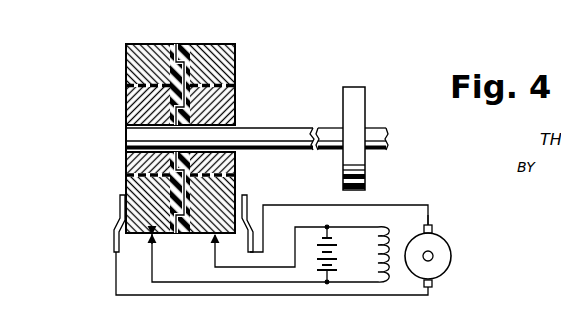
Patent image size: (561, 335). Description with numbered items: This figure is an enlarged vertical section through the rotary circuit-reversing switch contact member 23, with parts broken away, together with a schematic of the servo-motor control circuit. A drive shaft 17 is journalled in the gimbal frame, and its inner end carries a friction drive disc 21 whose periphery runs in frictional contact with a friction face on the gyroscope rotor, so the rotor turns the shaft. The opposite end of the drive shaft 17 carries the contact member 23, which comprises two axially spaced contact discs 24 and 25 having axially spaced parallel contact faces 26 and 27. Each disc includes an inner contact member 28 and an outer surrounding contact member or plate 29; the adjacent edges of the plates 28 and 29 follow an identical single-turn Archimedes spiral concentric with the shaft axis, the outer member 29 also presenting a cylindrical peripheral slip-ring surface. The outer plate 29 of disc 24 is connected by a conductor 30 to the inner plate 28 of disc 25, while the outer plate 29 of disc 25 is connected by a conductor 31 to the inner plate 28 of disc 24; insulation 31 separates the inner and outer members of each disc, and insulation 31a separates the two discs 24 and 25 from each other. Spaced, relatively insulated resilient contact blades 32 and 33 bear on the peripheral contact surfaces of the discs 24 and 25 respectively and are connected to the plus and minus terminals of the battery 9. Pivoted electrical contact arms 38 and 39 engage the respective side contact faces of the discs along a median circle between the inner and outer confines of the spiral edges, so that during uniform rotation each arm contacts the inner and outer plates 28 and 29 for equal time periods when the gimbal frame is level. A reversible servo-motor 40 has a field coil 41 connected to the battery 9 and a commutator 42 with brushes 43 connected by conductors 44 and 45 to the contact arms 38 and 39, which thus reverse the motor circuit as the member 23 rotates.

The battery 9 is at (318, 262).
The drive shaft 17 is at (293, 135).
The friction drive disc 21 is at (358, 96).
The rotary switch contact member 23 is at (118, 43).
The contact disc 24 is at (151, 42).
The contact disc 25 is at (215, 42).
The contact face 26 is at (127, 113).
The contact face 27 is at (236, 65).
The inner contact member 28 is at (234, 88).
The outer contact member 29 is at (234, 55).
The conductor 30 is at (178, 44).
The conductor 31 is at (127, 84).
The insulation 31a is at (185, 43).
The contact blade 32 is at (152, 270).
The contact blade 33 is at (215, 267).
The contact arm 38 is at (119, 208).
The contact arm 39 is at (253, 193).
The servo-motor 40 is at (440, 214).
The field coil 41 is at (388, 234).
The commutator 42 is at (449, 257).
The brushes 43 is at (434, 229).
The conductor 44 is at (434, 287).
The conductor 45 is at (332, 205).